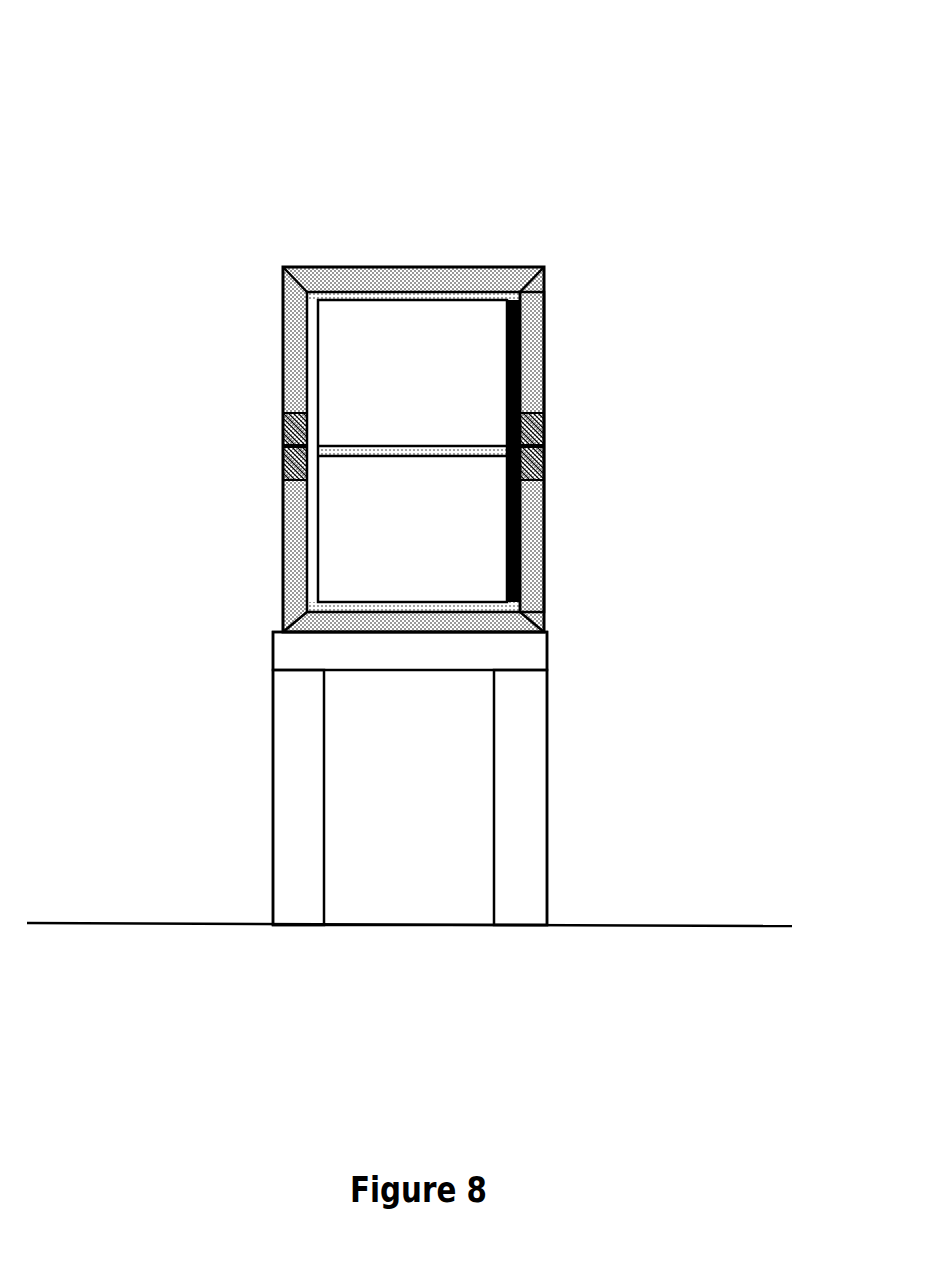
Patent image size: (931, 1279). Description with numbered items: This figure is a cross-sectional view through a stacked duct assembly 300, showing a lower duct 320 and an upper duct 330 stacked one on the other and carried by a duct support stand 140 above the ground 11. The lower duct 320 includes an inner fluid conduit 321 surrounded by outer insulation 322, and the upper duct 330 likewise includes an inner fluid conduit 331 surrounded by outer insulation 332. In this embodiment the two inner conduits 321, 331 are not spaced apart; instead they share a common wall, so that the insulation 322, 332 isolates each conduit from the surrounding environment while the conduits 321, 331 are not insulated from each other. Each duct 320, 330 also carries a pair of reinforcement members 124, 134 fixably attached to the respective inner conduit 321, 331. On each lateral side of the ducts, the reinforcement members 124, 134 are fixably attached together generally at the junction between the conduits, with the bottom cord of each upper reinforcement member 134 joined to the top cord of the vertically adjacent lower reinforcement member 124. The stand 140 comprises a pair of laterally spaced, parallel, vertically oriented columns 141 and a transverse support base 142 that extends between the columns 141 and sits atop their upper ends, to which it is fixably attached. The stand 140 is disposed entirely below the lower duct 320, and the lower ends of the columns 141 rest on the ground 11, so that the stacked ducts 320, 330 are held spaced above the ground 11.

The duct assembly 300 is at (143, 105).
The upper duct 330 is at (556, 271).
The inner fluid conduit 331 is at (384, 291).
The outer insulation 332 is at (443, 268).
The lower duct 320 is at (551, 590).
The inner fluid conduit 321 is at (518, 505).
The outer insulation 322 is at (529, 556).
The reinforcement member 134 is at (286, 422).
The reinforcement member 124 is at (283, 463).
The duct support stand 140 is at (627, 747).
The column 141 is at (528, 805).
The support base 142 is at (350, 658).
The ground 11 is at (734, 921).